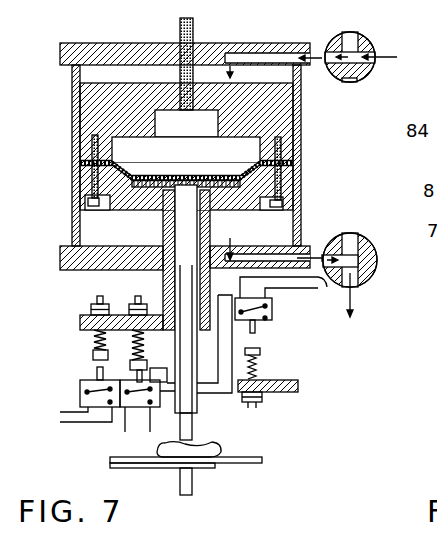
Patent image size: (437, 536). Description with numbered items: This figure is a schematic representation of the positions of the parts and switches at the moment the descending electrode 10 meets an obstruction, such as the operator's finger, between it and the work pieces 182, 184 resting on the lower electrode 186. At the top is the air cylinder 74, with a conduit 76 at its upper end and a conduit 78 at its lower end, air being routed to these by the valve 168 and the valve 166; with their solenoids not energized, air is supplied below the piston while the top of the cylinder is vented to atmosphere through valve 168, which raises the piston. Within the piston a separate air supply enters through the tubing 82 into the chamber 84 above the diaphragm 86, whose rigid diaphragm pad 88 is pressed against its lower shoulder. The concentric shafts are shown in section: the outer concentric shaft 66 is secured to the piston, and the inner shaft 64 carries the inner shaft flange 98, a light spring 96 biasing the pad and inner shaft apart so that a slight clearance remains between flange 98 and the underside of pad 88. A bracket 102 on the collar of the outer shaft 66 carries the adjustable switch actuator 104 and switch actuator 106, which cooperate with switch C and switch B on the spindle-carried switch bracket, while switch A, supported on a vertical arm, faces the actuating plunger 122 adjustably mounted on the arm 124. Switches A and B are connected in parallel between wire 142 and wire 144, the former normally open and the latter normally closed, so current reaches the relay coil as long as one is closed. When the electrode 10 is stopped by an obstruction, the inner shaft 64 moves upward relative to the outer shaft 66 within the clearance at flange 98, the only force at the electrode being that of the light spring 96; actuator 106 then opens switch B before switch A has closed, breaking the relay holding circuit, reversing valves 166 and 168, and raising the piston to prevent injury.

The tubing 82 is at (180, 30).
The conduit 76 is at (250, 52).
The valve 168 is at (375, 45).
The chamber 84 is at (190, 145).
The diaphragm 86 is at (205, 178).
The diaphragm pad 88 is at (72, 182).
The air cylinder 74 is at (76, 231).
The inner shaft flange 98 is at (143, 198).
The outer concentric shaft 66 is at (178, 233).
The spring 96 is at (208, 236).
The conduit 78 is at (276, 258).
The valve 166 is at (348, 233).
The inner shaft 64 is at (185, 285).
The electrode 10 is at (193, 428).
The work piece 184 is at (113, 457).
The work piece 182 is at (262, 457).
The lower electrode 186 is at (193, 486).
The bracket 102 is at (80, 321).
The switch actuator 104 is at (93, 355).
The switch actuator 106 is at (143, 365).
The switch C is at (80, 386).
The switch B is at (156, 406).
The switch A is at (273, 310).
The wire 142 is at (318, 288).
The wire 144 is at (311, 307).
The actuating plunger 122 is at (260, 352).
The arm 124 is at (298, 386).